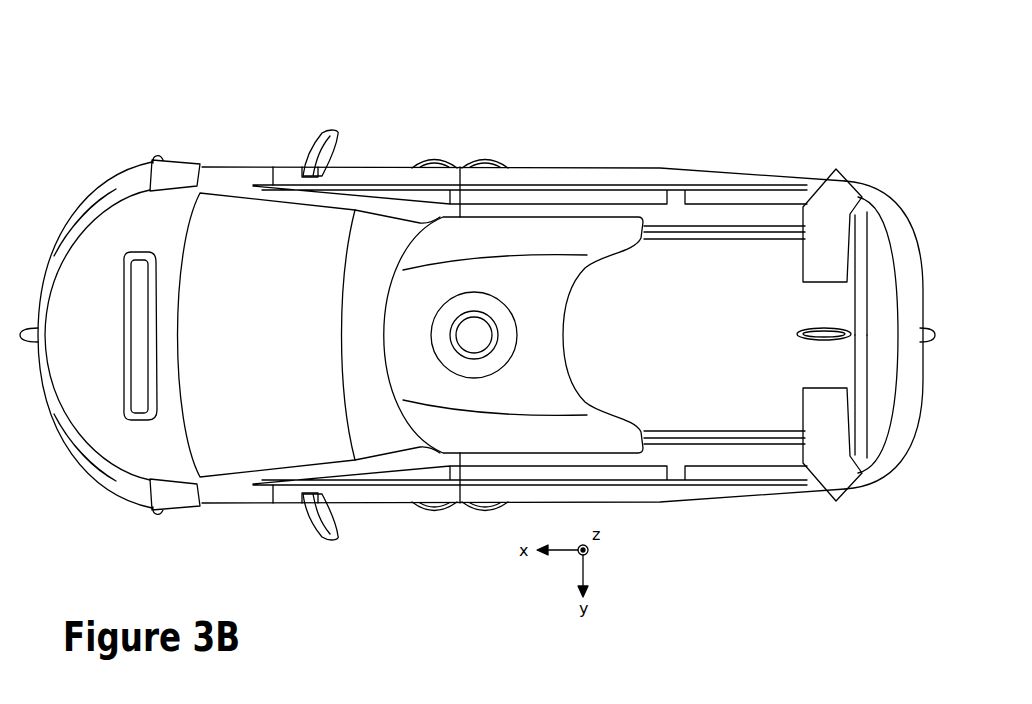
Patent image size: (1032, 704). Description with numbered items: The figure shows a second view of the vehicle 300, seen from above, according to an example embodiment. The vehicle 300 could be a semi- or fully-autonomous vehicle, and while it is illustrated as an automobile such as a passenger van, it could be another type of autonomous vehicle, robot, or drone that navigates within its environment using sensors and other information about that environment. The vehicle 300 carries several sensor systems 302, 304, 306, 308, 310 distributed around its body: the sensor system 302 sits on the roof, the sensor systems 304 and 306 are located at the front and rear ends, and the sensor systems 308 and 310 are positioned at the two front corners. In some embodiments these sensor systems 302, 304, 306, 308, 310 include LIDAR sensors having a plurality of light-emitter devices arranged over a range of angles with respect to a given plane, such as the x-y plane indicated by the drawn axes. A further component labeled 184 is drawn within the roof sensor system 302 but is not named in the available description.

The vehicle 300 is at (477, 291).
The sensor system 302 is at (483, 293).
The sensor system 304 is at (27, 327).
The sensor system 306 is at (927, 322).
The sensor system 308 is at (158, 157).
The sensor system 310 is at (157, 508).
The lidar sensor 184 is at (457, 320).